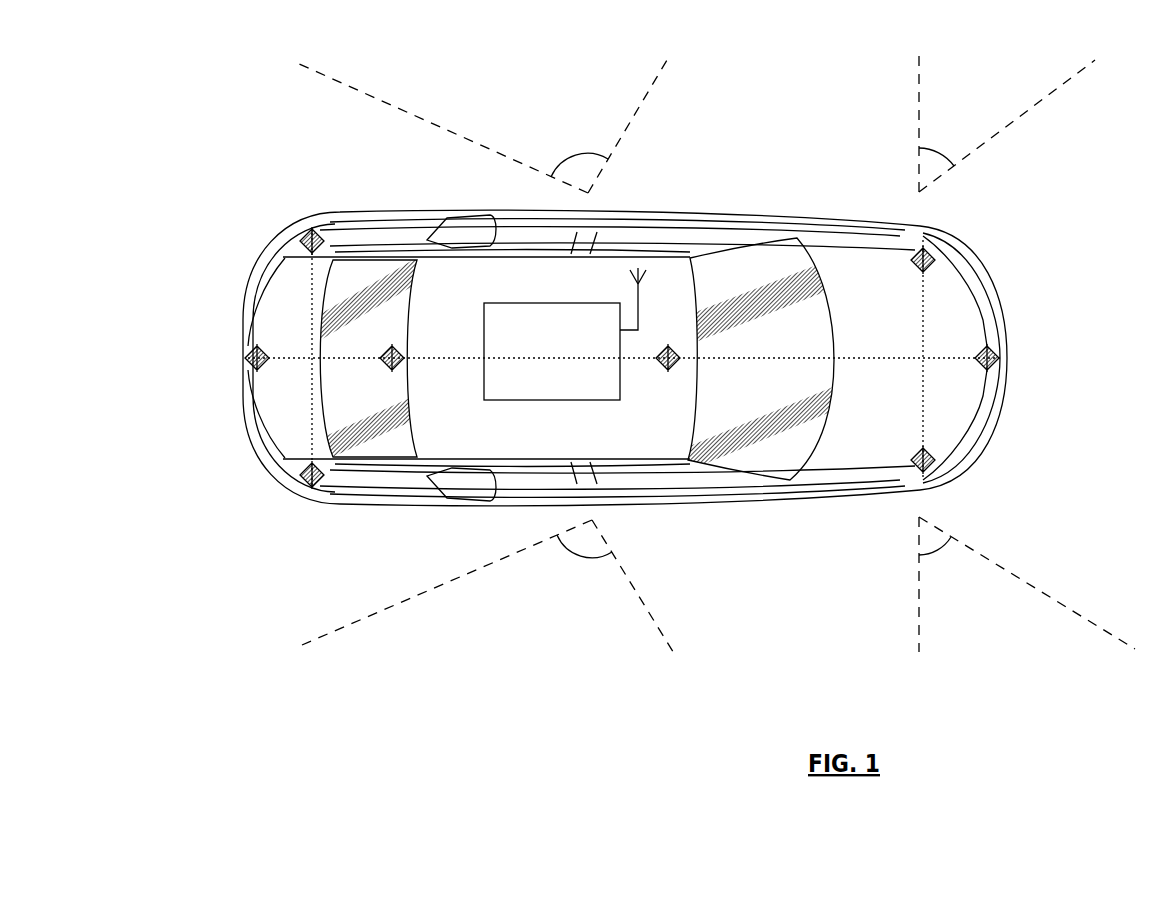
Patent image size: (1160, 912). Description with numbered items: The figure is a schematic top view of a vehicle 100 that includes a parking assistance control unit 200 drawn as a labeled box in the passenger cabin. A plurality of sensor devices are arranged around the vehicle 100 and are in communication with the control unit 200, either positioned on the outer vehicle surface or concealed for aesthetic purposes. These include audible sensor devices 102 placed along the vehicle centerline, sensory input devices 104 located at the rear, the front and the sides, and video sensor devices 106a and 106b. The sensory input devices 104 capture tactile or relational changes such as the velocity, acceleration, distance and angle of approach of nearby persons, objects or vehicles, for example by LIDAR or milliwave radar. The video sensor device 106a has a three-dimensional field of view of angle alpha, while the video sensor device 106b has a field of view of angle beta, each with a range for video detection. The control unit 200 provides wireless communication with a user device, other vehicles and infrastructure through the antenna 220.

The vehicle 100 is at (824, 214).
The audible sensor device 102 is at (405, 355).
The sensory input device 104 is at (312, 228).
The video sensor device 106a is at (486, 351).
The video sensor device 106b is at (1027, 349).
The parking assistance control unit 200 is at (572, 402).
The antenna 220 is at (640, 322).